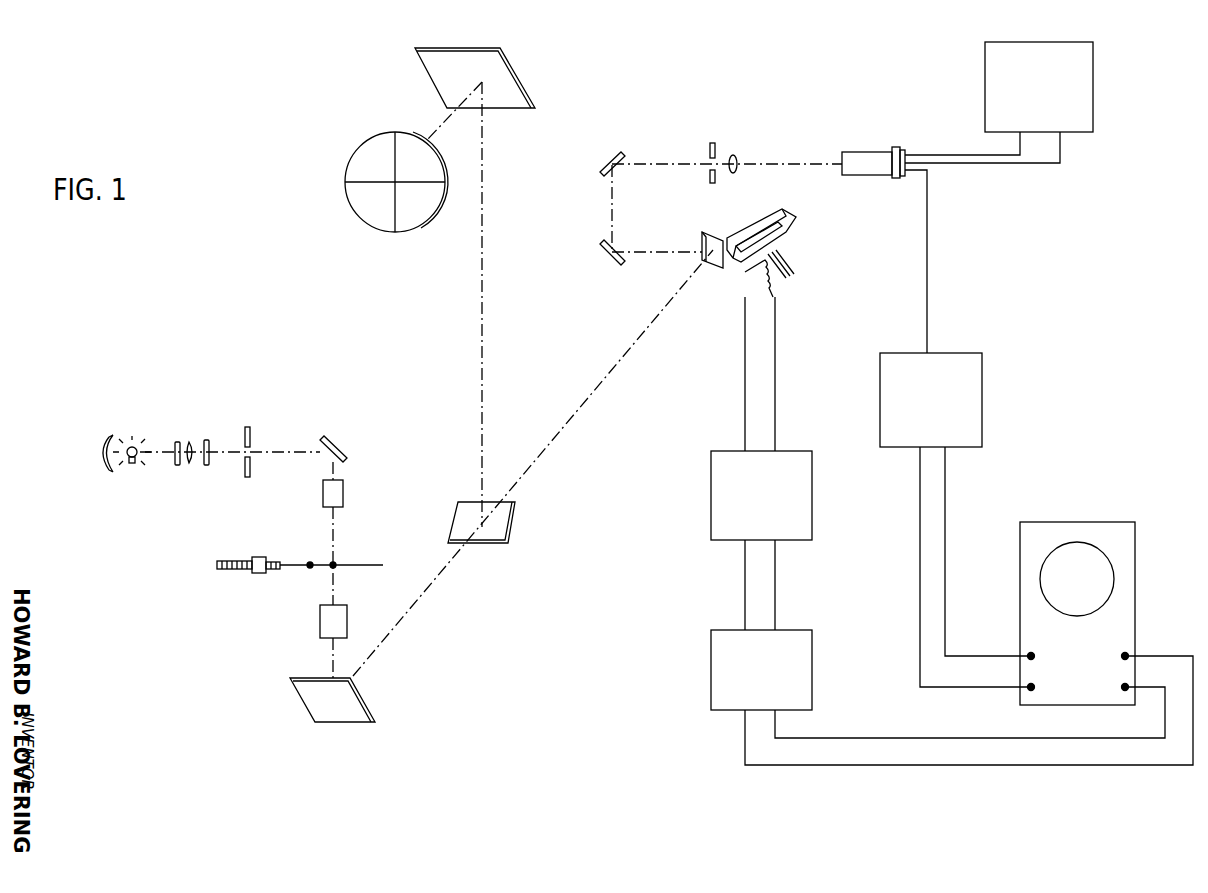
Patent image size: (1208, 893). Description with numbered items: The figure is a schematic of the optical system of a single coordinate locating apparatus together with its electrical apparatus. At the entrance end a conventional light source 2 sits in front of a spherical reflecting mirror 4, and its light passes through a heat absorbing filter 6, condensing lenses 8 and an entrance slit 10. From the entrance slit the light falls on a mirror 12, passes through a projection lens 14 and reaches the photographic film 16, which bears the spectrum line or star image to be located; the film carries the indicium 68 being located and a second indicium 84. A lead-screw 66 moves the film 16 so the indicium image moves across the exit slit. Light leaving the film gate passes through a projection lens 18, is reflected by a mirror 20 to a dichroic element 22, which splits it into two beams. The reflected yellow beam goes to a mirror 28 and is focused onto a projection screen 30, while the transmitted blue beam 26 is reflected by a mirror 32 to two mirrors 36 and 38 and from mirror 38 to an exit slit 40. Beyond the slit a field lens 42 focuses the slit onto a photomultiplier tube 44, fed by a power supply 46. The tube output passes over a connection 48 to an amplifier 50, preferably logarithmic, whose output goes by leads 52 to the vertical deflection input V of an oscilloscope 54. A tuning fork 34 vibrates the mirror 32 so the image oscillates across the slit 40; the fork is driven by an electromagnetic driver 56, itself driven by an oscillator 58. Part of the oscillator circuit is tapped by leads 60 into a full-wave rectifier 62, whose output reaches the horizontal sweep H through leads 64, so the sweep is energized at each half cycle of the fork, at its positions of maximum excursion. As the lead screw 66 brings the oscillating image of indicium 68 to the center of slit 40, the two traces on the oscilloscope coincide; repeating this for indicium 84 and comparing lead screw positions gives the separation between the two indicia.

The light source 2 is at (132, 445).
The spherical reflecting mirror 4 is at (103, 455).
The heat absorbing filter 6 is at (176, 440).
The condensing lenses 8 is at (196, 440).
The entrance slit 10 is at (250, 425).
The mirror 12 is at (345, 452).
The projection lens 14 is at (343, 496).
The photographic film 16 is at (376, 566).
The projection lens 18 is at (320, 620).
The mirror 20 is at (370, 700).
The dichroic element 22 is at (500, 520).
The light beam 26 is at (604, 386).
The mirror 28 is at (435, 70).
The projection screen 30 is at (348, 162).
The mirror 32 is at (700, 243).
The tuning fork 34 is at (781, 228).
The mirror 36 is at (604, 262).
The mirror 38 is at (606, 162).
The exit slit 40 is at (712, 145).
The field lens 42 is at (735, 156).
The photomultiplier tube 44 is at (872, 152).
The power supply 46 is at (1095, 95).
The connection 48 is at (927, 278).
The amplifier 50 is at (982, 410).
The leads 52 is at (945, 493).
The oscilloscope 54 is at (1125, 560).
The electromagnetic driver 56 is at (789, 270).
The oscillator 58 is at (812, 504).
The leads 60 is at (748, 603).
The full-wave rectifier 62 is at (812, 672).
The leads 64 is at (968, 775).
The lead-screw 66 is at (245, 575).
The indicium 68 is at (335, 562).
The second indicium 84 is at (310, 562).